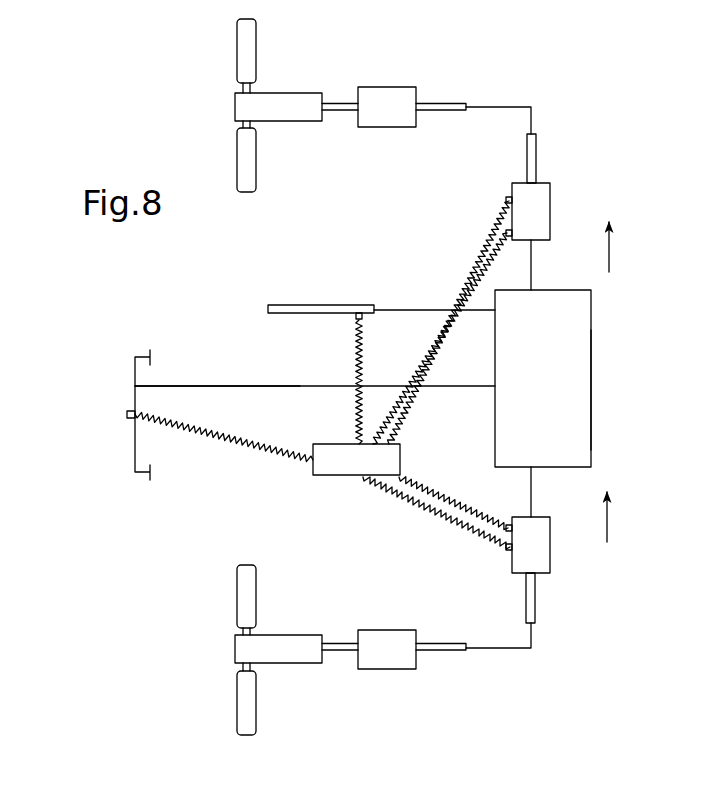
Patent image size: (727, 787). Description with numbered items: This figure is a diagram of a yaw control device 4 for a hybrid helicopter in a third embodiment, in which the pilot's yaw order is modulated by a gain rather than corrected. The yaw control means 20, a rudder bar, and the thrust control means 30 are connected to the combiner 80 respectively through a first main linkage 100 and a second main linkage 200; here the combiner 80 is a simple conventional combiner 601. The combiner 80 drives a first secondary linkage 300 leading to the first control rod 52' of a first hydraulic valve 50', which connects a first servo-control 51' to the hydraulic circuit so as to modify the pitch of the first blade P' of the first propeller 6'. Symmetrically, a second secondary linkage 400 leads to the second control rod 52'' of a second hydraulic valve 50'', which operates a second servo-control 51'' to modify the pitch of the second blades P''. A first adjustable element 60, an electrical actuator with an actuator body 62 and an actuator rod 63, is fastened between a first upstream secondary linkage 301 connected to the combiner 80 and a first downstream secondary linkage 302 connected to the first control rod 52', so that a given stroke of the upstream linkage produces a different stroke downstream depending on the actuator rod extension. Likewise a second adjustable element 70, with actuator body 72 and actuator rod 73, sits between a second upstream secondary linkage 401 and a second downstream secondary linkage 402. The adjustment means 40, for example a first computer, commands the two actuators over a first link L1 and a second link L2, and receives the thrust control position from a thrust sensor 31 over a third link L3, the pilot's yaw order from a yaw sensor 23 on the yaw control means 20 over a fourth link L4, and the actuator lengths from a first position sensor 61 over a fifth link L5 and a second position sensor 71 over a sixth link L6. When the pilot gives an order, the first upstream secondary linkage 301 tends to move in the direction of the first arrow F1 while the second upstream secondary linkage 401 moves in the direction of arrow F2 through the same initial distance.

The yaw control device 4 is at (53, 365).
The first propeller 6' is at (313, 373).
The first blade P' is at (268, 101).
The second blades P'' is at (222, 650).
The first servo-control 51' is at (296, 84).
The second servo-control 51'' is at (296, 673).
The first hydraulic valve 50' is at (385, 84).
The second hydraulic valve 50'' is at (395, 675).
The first control rod 52' is at (449, 82).
The second control rod 52'' is at (454, 676).
The first secondary linkage 300 is at (512, 173).
The first downstream secondary linkage 302 is at (531, 122).
The first upstream secondary linkage 301 is at (531, 273).
The actuator rod 63 is at (536, 155).
The actuator body 62 is at (550, 210).
The first position sensor 61 is at (510, 238).
The first adjustable element 60 is at (490, 232).
The first arrow F1 is at (626, 247).
The combiner 80 is at (584, 378).
The simple conventional combiner 601 is at (591, 393).
The thrust control means 30 is at (316, 284).
The thrust sensor 31 is at (357, 320).
The second main linkage 200 is at (402, 300).
The first main linkage 100 is at (182, 368).
The yaw control means 20 is at (108, 451).
The yaw sensor 23 is at (127, 414).
The adjustment means 40 is at (332, 475).
The first link L1 is at (449, 322).
The second link L2 is at (436, 513).
The third link L3 is at (342, 382).
The fourth link L4 is at (224, 440).
The fifth link L5 is at (440, 338).
The sixth link L6 is at (453, 499).
The second secondary linkage 400 is at (528, 576).
The second upstream secondary linkage 401 is at (531, 500).
The second downstream secondary linkage 402 is at (531, 636).
The second adjustable element 70 is at (504, 532).
The second position sensor 71 is at (506, 527).
The actuator body 72 is at (550, 555).
The actuator rod 73 is at (535, 610).
The arrow F2 is at (625, 517).